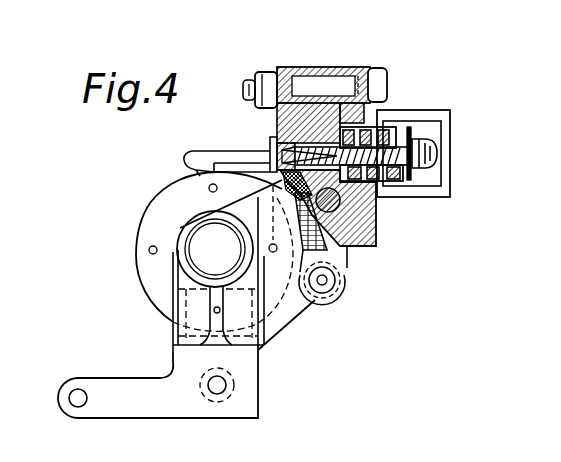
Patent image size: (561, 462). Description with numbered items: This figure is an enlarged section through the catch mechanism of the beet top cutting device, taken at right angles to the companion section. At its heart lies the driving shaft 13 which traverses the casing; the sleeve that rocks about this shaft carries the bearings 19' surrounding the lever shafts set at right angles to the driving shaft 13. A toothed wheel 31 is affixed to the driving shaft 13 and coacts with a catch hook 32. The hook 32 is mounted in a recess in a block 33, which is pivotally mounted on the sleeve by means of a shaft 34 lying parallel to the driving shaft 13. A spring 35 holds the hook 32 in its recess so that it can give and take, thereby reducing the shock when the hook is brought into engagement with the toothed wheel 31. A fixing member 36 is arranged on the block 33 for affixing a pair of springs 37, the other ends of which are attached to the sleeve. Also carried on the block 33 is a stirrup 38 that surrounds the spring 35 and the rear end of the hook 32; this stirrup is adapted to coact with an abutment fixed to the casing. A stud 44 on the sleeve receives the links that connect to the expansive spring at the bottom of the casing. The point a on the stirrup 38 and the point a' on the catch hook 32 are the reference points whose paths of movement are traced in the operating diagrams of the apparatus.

The driving shaft 13 is at (202, 244).
The bearings 19' is at (194, 269).
The toothed wheel 31 is at (157, 210).
The catch hook 32 is at (211, 150).
The block 33 is at (333, 68).
The shaft 34 is at (376, 206).
The spring 35 is at (390, 127).
The fixing member 36 is at (283, 69).
The springs 37 is at (345, 257).
The stirrup 38 is at (451, 174).
The stud 44 is at (103, 387).
The point on the stirrup a is at (461, 208).
The point on the catch hook a' is at (172, 148).